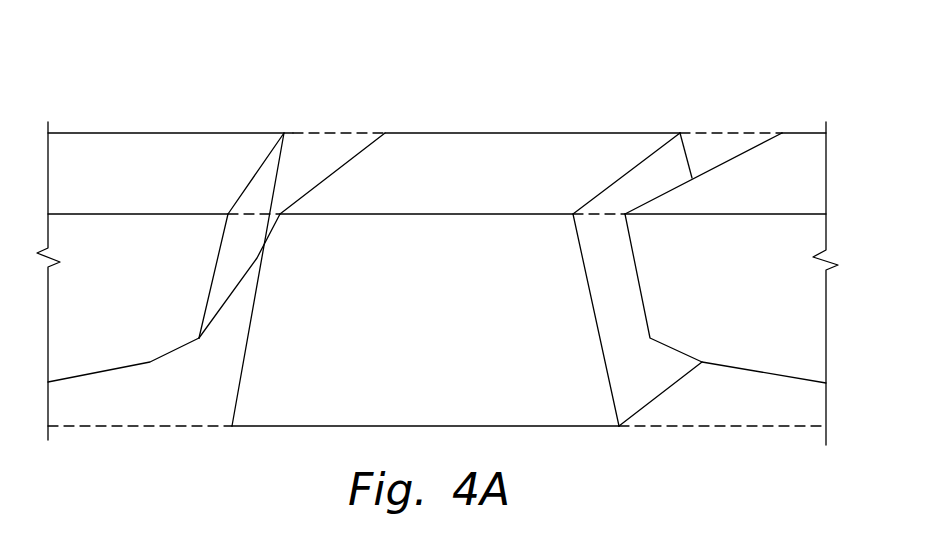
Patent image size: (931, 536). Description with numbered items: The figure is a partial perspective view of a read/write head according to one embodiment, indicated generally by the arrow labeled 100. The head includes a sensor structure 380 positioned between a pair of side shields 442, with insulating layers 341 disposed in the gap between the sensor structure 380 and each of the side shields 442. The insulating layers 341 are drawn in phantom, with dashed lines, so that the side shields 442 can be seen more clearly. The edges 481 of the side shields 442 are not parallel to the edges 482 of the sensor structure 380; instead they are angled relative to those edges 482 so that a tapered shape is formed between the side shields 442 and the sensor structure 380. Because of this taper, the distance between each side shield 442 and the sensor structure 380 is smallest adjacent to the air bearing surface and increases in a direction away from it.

The semiconductor device 100 is at (673, 48).
The side shields 442 is at (165, 140).
The edges of the side shields 481 is at (263, 180).
The edges of the sensor structure 482 is at (353, 150).
The sensor structure 380 is at (495, 140).
The insulating layers 341 is at (138, 428).